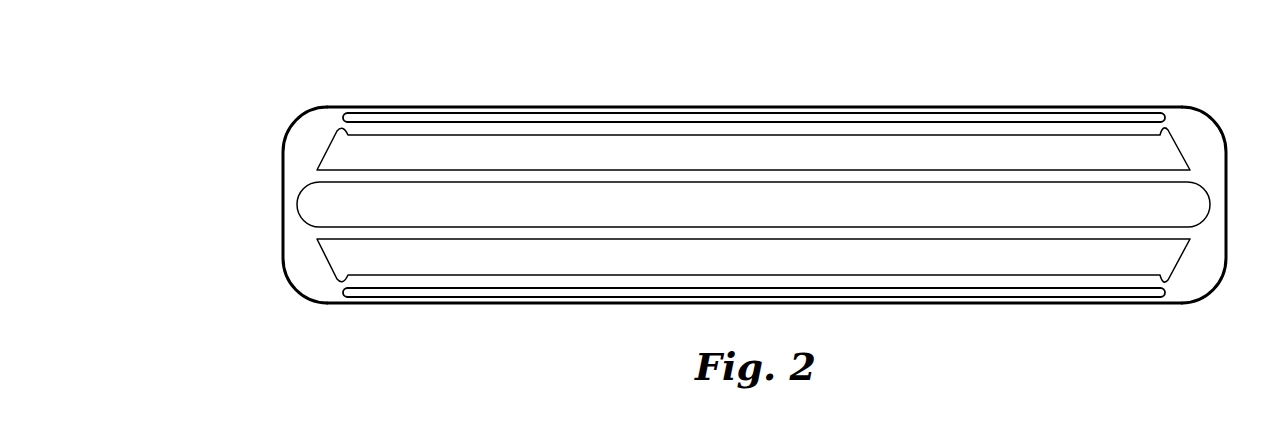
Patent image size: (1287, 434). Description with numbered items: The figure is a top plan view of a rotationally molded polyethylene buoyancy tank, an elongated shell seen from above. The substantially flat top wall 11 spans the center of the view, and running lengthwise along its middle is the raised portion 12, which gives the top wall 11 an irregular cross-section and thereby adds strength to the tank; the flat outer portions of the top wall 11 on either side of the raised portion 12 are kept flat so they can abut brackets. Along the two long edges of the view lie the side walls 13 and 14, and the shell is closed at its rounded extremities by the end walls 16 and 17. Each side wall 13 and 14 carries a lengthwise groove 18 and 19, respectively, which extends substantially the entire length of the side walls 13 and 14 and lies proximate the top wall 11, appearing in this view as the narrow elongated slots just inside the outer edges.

The top wall 11 is at (895, 148).
The raised portion 12 is at (705, 200).
The side wall 13 is at (545, 305).
The side wall 14 is at (490, 107).
The end wall 16 is at (282, 198).
The end wall 17 is at (1226, 178).
The lengthwise groove 18 is at (957, 290).
The lengthwise groove 19 is at (1052, 118).